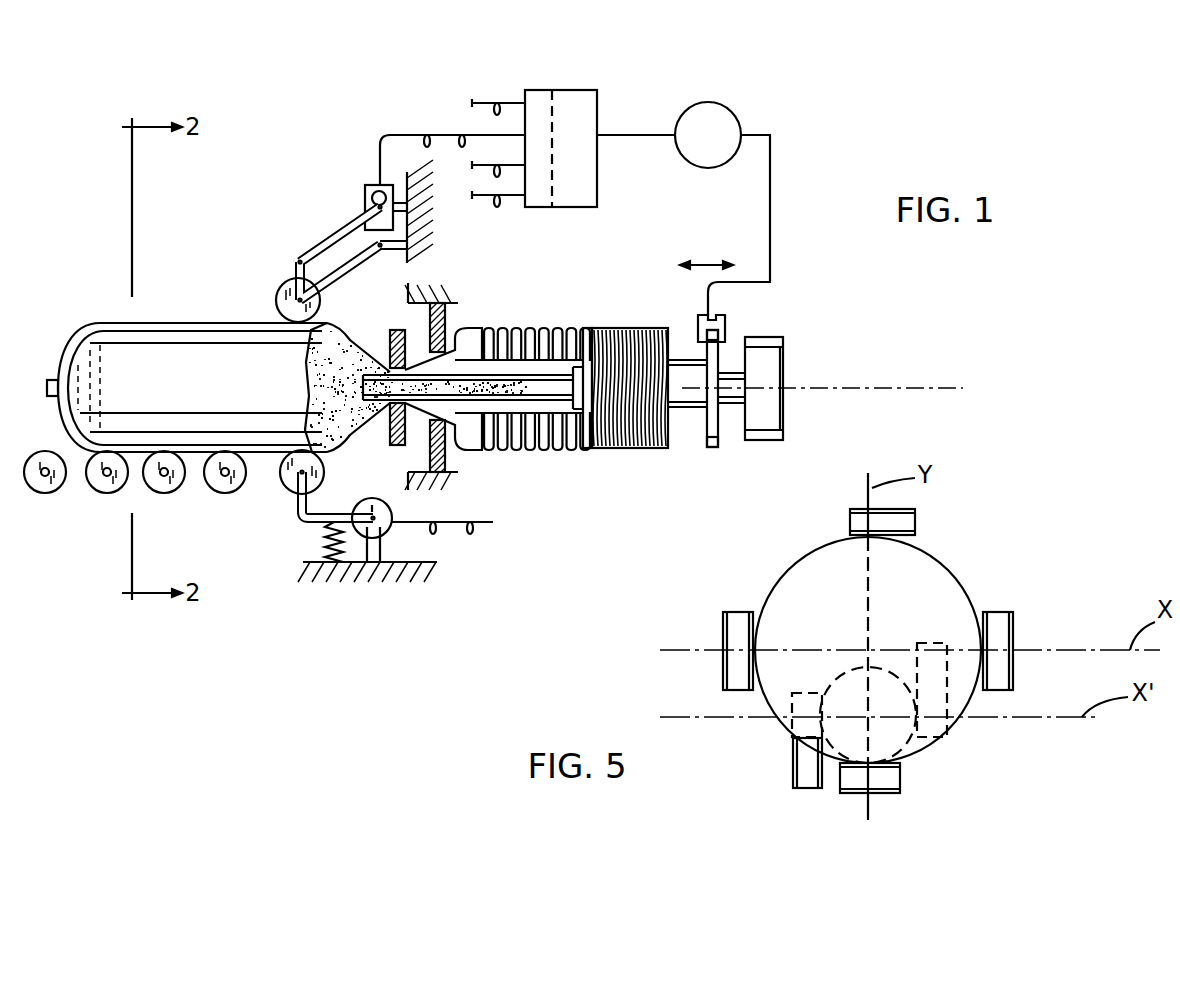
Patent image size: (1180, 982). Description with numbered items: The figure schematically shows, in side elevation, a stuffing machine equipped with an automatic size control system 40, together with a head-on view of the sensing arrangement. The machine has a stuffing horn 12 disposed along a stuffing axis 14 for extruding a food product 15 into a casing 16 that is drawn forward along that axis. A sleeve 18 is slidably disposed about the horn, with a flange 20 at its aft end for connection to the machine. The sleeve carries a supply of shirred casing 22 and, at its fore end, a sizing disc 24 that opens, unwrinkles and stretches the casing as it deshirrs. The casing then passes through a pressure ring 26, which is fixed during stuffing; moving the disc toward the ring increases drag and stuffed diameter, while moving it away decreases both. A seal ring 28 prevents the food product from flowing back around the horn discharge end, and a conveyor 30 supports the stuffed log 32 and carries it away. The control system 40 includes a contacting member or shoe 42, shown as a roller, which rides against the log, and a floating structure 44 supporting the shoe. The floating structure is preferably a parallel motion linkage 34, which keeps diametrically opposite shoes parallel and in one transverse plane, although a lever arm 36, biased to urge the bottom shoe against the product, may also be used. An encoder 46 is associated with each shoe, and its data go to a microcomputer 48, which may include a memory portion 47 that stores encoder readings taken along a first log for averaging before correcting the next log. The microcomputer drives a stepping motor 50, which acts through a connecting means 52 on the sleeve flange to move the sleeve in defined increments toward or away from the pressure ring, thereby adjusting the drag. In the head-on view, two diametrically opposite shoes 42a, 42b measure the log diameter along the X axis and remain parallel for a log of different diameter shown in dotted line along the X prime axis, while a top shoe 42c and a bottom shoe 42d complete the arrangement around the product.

In FIG. 1, the stuffing horn 12 is at (732, 388).
In FIG. 1, the stuffing axis 14 is at (905, 388).
In FIG. 1, the food product 15 is at (318, 388).
In FIG. 1, the casing 16 is at (428, 436).
In FIG. 1, the sleeve 18 is at (686, 408).
In FIG. 1, the flange 20 is at (713, 450).
In FIG. 1, the shirred casing 22 is at (620, 450).
In FIG. 1, the sizing disc 24 is at (472, 326).
In FIG. 1, the pressure ring 26 is at (446, 320).
In FIG. 1, the seal ring 28 is at (388, 342).
In FIG. 1, the conveyor 30 is at (103, 492).
In FIG. 1, the stuffed log 32 is at (125, 342).
In FIG. 5, the stuffed log 32 is at (965, 580).
In FIG. 1, the parallel motion linkage 34 is at (343, 272).
In FIG. 1, the lever arm 36 is at (305, 527).
In FIG. 1, the automatic size control system 40 is at (363, 123).
In FIG. 1, the shoe 42 is at (278, 297).
In FIG. 5, the side shoe 42a is at (733, 632).
In FIG. 5, the side shoe 42b is at (1013, 625).
In FIG. 5, the top shoe 42c is at (905, 524).
In FIG. 5, the bottom shoe 42d is at (895, 782).
In FIG. 1, the floating structure 44 is at (328, 215).
In FIG. 1, the encoder 46 is at (368, 187).
In FIG. 1, the memory portion 47 is at (535, 102).
In FIG. 1, the microcomputer 48 is at (587, 90).
In FIG. 1, the stepping motor 50 is at (735, 113).
In FIG. 1, the connecting means 52 is at (772, 270).